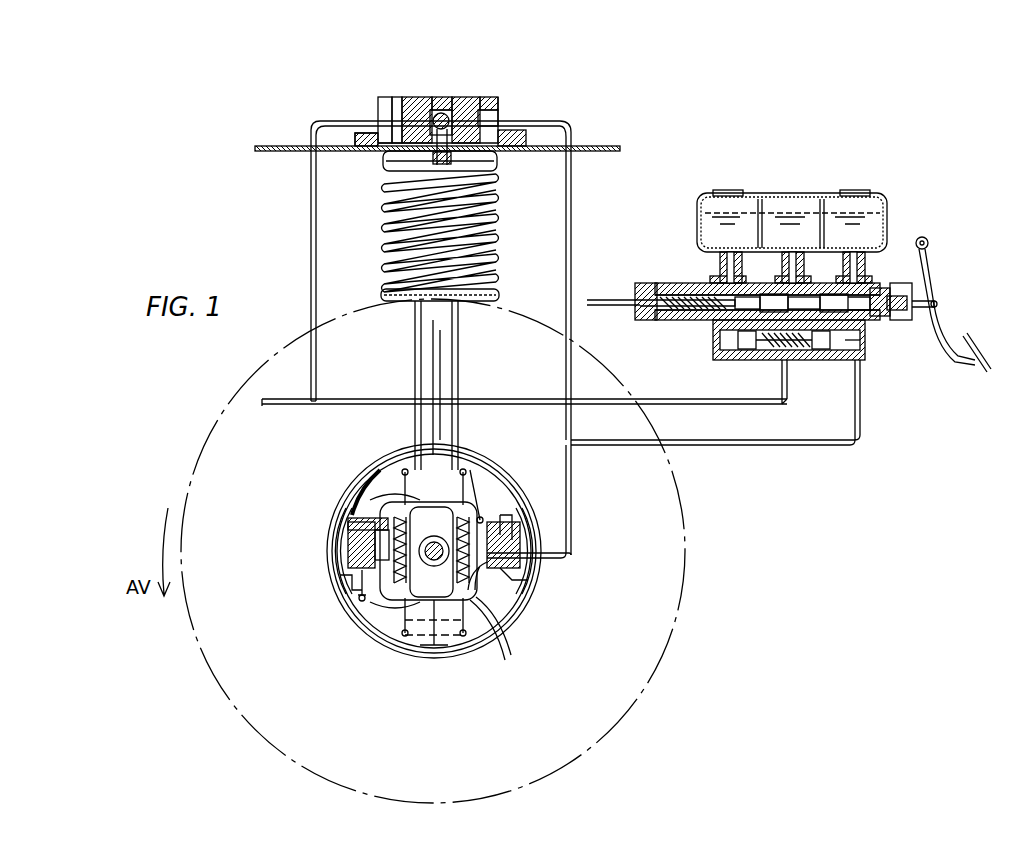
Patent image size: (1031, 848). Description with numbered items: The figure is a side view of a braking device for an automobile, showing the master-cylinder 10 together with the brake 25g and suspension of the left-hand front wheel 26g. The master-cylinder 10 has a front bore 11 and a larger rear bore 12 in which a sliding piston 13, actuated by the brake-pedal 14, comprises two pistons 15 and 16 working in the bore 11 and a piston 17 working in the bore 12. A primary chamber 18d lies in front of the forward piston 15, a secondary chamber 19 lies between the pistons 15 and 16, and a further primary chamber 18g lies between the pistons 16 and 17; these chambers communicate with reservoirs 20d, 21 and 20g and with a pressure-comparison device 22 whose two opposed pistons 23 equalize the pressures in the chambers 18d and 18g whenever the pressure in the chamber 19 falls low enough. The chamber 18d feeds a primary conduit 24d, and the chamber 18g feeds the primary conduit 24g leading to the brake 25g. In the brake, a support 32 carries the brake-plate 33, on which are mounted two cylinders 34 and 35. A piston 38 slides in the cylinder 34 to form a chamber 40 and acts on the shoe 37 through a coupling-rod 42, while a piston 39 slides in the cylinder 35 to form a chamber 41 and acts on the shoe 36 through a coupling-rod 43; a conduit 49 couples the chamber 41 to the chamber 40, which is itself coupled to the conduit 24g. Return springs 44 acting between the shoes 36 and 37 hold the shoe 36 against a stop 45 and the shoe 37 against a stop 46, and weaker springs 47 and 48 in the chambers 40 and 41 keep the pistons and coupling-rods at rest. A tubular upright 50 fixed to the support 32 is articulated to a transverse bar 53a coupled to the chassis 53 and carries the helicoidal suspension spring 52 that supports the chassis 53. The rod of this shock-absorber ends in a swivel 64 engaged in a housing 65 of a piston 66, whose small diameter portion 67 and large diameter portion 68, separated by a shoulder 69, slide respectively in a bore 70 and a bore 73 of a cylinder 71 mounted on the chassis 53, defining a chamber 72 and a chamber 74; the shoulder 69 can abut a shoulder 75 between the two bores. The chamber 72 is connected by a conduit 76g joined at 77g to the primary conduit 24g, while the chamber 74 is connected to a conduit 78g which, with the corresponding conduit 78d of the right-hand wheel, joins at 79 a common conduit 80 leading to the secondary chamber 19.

The master-cylinder 10 is at (893, 357).
The front bore 11 is at (660, 290).
The rear bore 12 is at (878, 288).
The sliding piston 13 is at (895, 326).
The brake-pedal 14 is at (975, 352).
The forward piston 15 is at (766, 294).
The piston 16 is at (826, 294).
The piston 17 is at (930, 286).
The primary chamber 18d is at (683, 322).
The further primary chamber 18g is at (882, 355).
The secondary chamber 19 is at (800, 352).
The reservoir 20d is at (698, 218).
The reservoir 20g is at (887, 218).
The reservoir 21 is at (790, 195).
The pressure-comparison device 22 is at (766, 366).
The opposed pistons 23 is at (822, 350).
The primary conduit 24d is at (612, 298).
The primary conduit 24g is at (768, 458).
The brake 25g is at (520, 628).
The left-hand front wheel 26g is at (688, 576).
The support 32 is at (376, 467).
The brake-plate 33 is at (340, 624).
The cylinder 34 is at (540, 570).
The cylinder 35 is at (348, 545).
The brake shoe 36 is at (440, 640).
The brake shoe 37 is at (410, 458).
The piston 38 is at (520, 528).
The piston 39 is at (375, 558).
The chamber 40 is at (478, 578).
The chamber 41 is at (360, 512).
The coupling-rod 42 is at (512, 518).
The coupling-rod 43 is at (340, 580).
The return springs 44 is at (390, 512).
The stop 45 is at (368, 590).
The stop 46 is at (490, 510).
The spring 47 is at (530, 586).
The spring 48 is at (348, 524).
The conduit 49 is at (508, 658).
The tubular upright 50 is at (459, 332).
The helicoidal suspension spring 52 is at (384, 290).
The chassis 53 is at (590, 150).
The transverse bar 53a is at (425, 650).
The swivel 64 is at (444, 112).
The housing 65 is at (390, 182).
The piston 66 is at (397, 98).
The small diameter portion 67 is at (488, 98).
The large diameter portion 68 is at (420, 98).
The shoulder 69 is at (497, 160).
The bore 70 is at (526, 138).
The cylinder 71 is at (500, 100).
The chamber 72 is at (498, 118).
The bore 73 is at (384, 125).
The chamber 74 is at (388, 100).
The shoulder 75 is at (470, 98).
The conduit 76g is at (572, 385).
The connection 77g is at (582, 448).
The conduit 78d is at (290, 410).
The conduit 78g is at (311, 254).
The junction 79 is at (317, 399).
The common conduit 80 is at (700, 410).